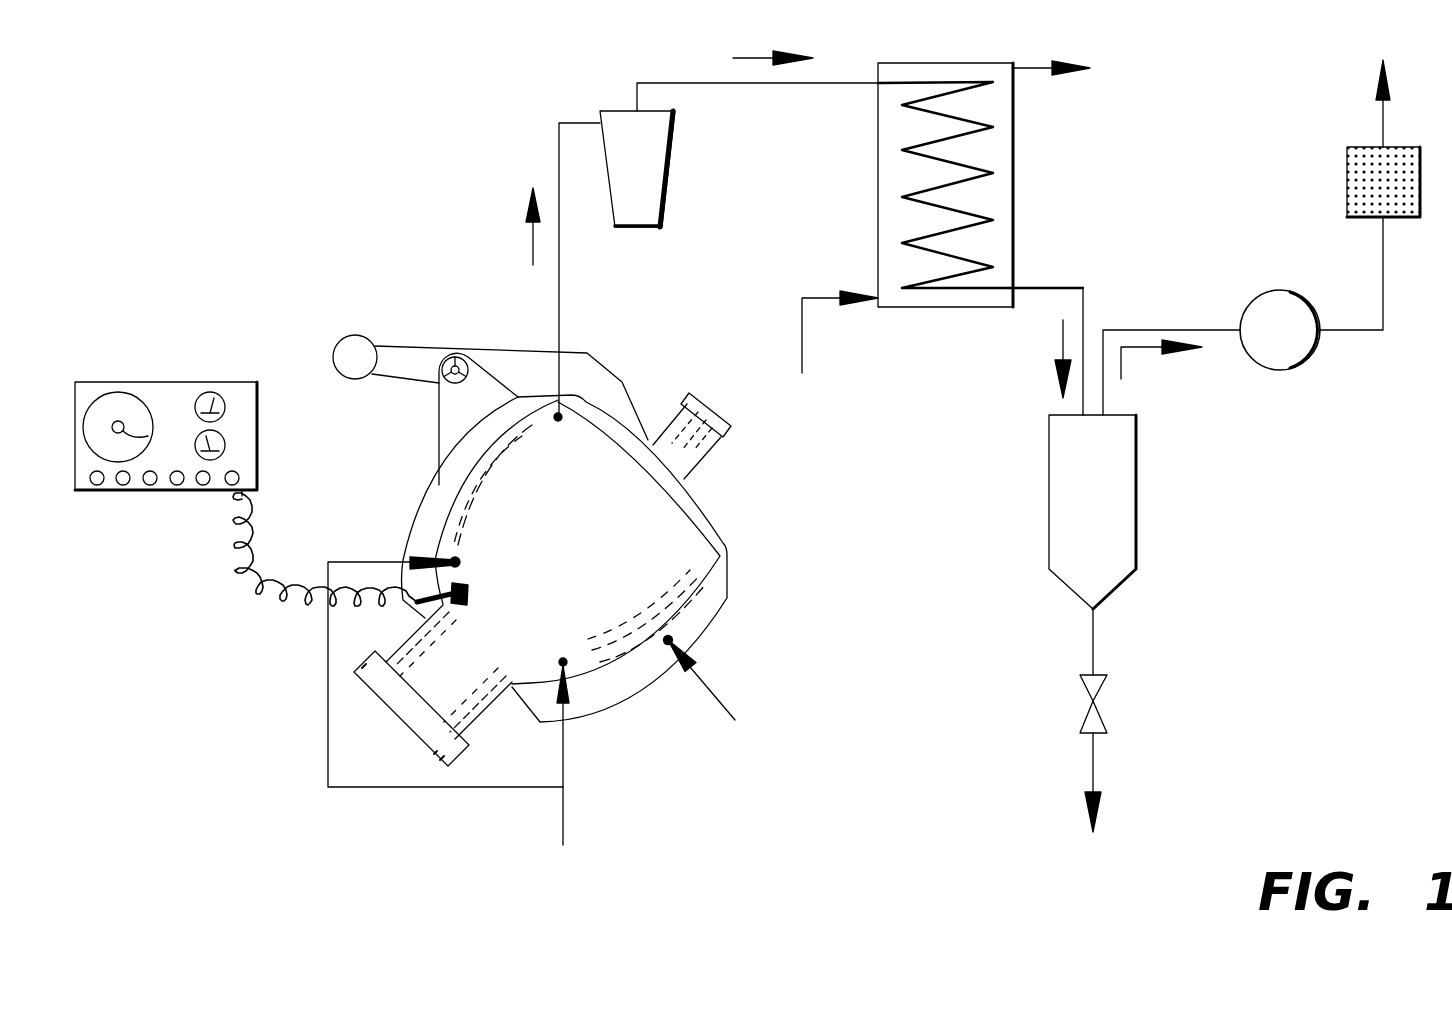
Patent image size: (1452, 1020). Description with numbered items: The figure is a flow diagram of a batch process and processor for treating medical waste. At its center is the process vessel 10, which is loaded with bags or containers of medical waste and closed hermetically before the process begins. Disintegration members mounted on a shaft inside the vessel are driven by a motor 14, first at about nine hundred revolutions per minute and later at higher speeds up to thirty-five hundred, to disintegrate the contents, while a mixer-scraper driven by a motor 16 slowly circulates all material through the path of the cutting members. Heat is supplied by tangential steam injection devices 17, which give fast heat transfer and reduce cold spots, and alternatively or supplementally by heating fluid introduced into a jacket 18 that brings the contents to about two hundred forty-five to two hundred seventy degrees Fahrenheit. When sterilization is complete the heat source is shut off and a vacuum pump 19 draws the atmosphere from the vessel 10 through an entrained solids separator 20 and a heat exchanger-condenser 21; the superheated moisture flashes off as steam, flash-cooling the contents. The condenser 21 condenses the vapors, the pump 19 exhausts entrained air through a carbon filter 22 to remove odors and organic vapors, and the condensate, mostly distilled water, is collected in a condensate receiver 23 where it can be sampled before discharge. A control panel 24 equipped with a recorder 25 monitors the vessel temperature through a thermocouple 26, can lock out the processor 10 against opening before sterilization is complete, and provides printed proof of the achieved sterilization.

The process vessel 10 is at (530, 528).
The motor 14 is at (463, 707).
The motor 16 is at (687, 445).
The steam injection devices 17 is at (351, 562).
The jacket 18 is at (717, 692).
The vacuum pump 19 is at (1295, 352).
The entrained solids separator 20 is at (667, 207).
The heat exchanger-condenser 21 is at (1017, 137).
The carbon filter 22 is at (1368, 186).
The condensate receiver 23 is at (1119, 539).
The control panel 24 is at (257, 423).
The recorder 25 is at (126, 425).
The thermocouple 26 is at (378, 619).